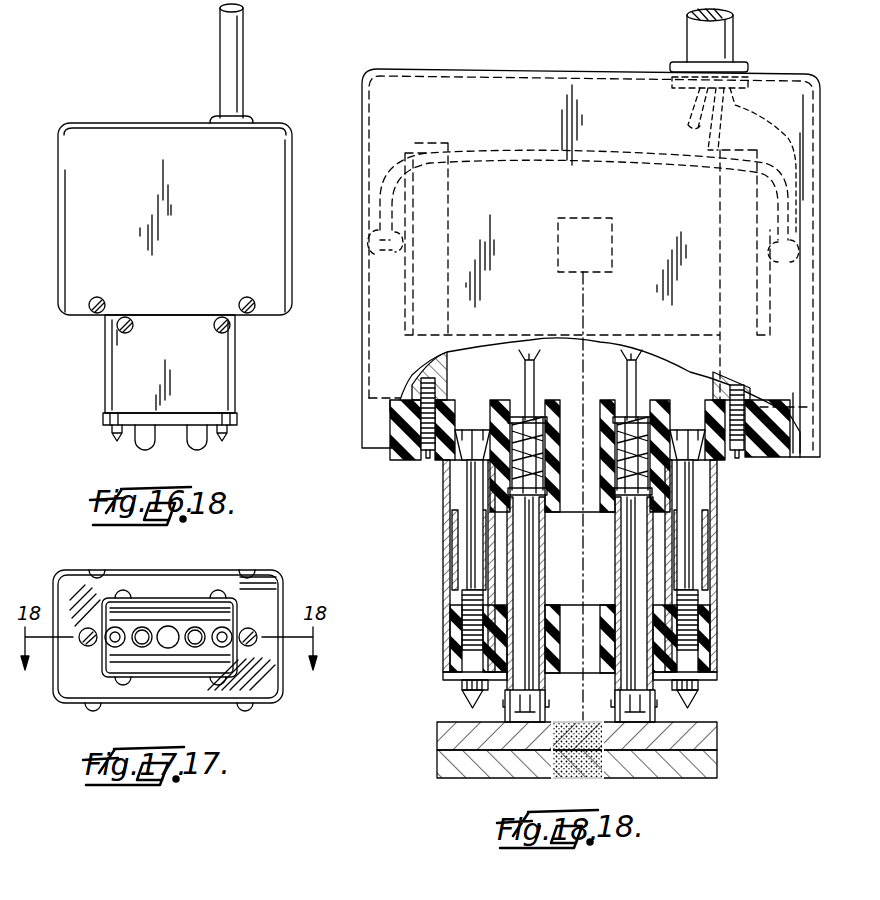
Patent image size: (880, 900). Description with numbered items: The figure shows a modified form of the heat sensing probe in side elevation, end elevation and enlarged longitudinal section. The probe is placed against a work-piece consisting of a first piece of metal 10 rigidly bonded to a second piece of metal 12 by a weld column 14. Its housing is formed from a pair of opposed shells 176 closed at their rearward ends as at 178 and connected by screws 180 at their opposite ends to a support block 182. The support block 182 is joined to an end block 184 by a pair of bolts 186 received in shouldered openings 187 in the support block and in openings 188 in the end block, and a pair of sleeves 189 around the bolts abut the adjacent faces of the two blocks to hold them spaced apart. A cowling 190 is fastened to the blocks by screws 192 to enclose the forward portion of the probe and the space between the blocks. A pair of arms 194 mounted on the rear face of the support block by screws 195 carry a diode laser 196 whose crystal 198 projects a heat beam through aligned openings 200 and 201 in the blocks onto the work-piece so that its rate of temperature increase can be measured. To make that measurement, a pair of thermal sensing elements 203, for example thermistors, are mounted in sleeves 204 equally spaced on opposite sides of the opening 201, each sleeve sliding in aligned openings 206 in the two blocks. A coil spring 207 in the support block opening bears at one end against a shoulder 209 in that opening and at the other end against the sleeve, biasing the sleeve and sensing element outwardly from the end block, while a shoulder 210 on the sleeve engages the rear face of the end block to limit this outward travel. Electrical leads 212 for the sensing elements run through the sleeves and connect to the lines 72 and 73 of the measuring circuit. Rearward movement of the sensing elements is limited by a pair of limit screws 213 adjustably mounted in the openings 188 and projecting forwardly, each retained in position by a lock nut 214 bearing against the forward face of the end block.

In FIG. 18, the first piece of metal 10 is at (718, 738).
In FIG. 18, the second piece of metal 12 is at (718, 766).
In FIG. 18, the weld column 14 is at (580, 776).
In FIG. 18, the line 72 is at (690, 110).
In FIG. 18, the line 73 is at (705, 136).
In FIG. 16, the opposed shells 176 is at (140, 135).
In FIG. 17, the opposed shells 176 is at (284, 592).
In FIG. 18, the opposed shells 176 is at (466, 90).
In FIG. 18, the closed rearward end of shells 178 is at (610, 72).
In FIG. 16, the screws 180 is at (95, 315).
In FIG. 17, the support block 182 is at (245, 588).
In FIG. 18, the support block 182 is at (406, 448).
In FIG. 17, the end block 184 is at (176, 606).
In FIG. 18, the end block 184 is at (455, 660).
In FIG. 18, the bolts 186 is at (470, 546).
In FIG. 18, the shouldered openings 187 is at (462, 420).
In FIG. 18, the openings 188 is at (462, 632).
In FIG. 18, the sleeves 189 is at (456, 584).
In FIG. 16, the cowling 190 is at (122, 382).
In FIG. 17, the cowling 190 is at (146, 680).
In FIG. 18, the cowling 190 is at (444, 522).
In FIG. 16, the screws 192 is at (216, 332).
In FIG. 18, the arms 194 is at (446, 397).
In FIG. 17, the screws 195 is at (86, 647).
In FIG. 18, the screws 195 is at (428, 455).
In FIG. 18, the diode laser 196 is at (510, 165).
In FIG. 18, the crystal 198 is at (618, 236).
In FIG. 18, the opening 200 is at (631, 363).
In FIG. 17, the opening 201 is at (168, 626).
In FIG. 18, the opening 201 is at (568, 606).
In FIG. 16, the thermal sensing elements 203 is at (148, 450).
In FIG. 17, the thermal sensing elements 203 is at (198, 630).
In FIG. 18, the thermal sensing elements 203 is at (522, 724).
In FIG. 18, the sleeves 204 is at (542, 562).
In FIG. 18, the aligned openings 206 is at (549, 472).
In FIG. 18, the coil spring 207 is at (650, 404).
In FIG. 18, the shoulder 209 is at (534, 418).
In FIG. 18, the shoulder 210 is at (488, 592).
In FIG. 18, the electrical leads 212 is at (655, 322).
In FIG. 16, the limit screws 213 is at (112, 437).
In FIG. 17, the limit screws 213 is at (114, 628).
In FIG. 18, the limit screws 213 is at (463, 706).
In FIG. 18, the lock nuts 214 is at (456, 686).